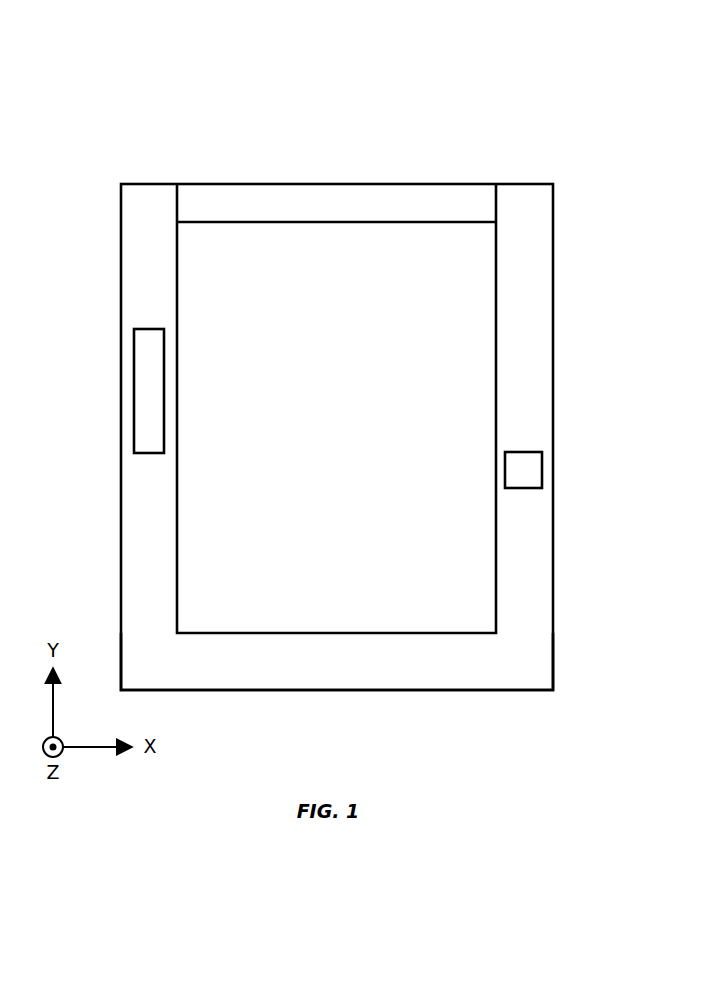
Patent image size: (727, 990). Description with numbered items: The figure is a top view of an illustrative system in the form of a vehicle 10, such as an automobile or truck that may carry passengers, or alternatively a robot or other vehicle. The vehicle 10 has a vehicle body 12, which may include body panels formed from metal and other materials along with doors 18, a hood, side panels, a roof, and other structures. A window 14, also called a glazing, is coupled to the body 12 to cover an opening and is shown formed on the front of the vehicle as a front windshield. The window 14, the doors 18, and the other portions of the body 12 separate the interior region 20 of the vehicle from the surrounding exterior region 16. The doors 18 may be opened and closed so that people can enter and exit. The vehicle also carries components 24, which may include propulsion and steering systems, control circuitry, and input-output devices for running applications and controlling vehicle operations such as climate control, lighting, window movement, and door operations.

The vehicle 10 is at (120, 142).
The vehicle body 12 is at (553, 323).
The window 14 is at (339, 210).
The exterior region 16 is at (571, 640).
The door 18 is at (143, 398).
The interior region 20 is at (336, 408).
The components 24 is at (535, 473).